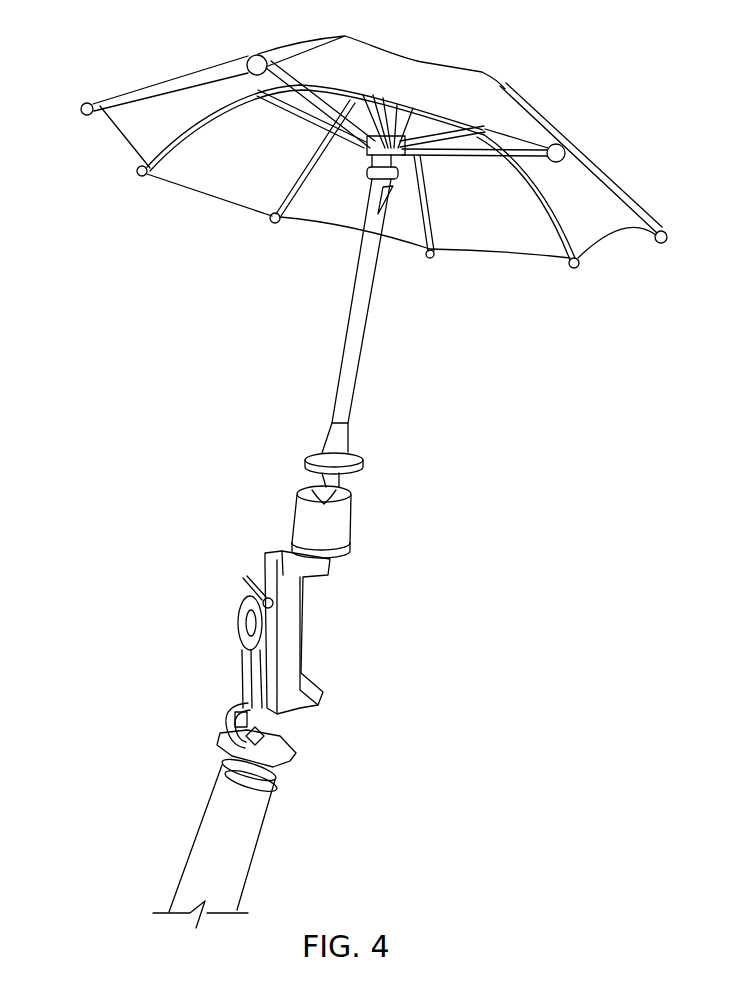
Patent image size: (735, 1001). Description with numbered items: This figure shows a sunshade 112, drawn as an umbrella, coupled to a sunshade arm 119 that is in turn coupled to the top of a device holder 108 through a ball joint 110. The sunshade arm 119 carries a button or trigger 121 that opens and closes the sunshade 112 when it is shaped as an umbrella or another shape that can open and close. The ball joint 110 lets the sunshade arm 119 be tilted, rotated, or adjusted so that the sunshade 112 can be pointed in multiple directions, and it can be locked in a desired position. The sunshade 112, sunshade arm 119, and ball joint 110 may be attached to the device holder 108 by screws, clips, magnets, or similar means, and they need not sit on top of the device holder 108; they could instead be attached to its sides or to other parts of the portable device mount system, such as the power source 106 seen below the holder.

The power source 106 is at (290, 813).
The device holder 108 is at (335, 607).
The ball joint 110 is at (277, 477).
The sunshade 112 is at (593, 132).
The sunshade arm 119 is at (377, 330).
The button or trigger 121 is at (390, 206).